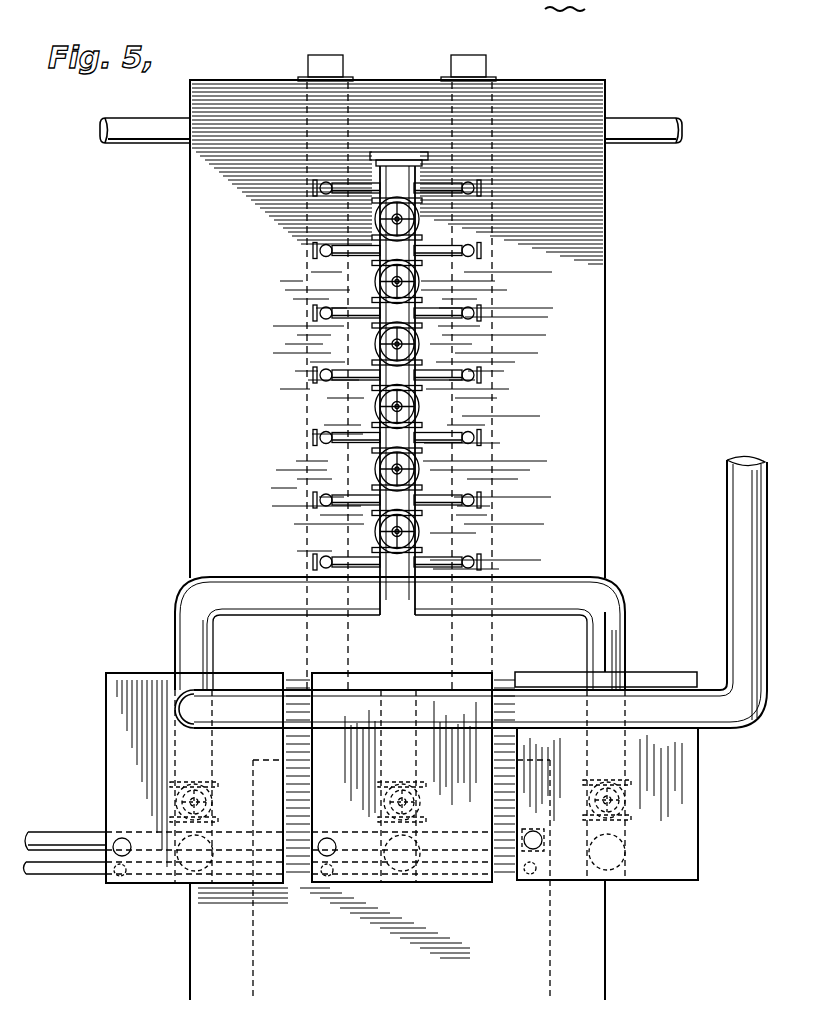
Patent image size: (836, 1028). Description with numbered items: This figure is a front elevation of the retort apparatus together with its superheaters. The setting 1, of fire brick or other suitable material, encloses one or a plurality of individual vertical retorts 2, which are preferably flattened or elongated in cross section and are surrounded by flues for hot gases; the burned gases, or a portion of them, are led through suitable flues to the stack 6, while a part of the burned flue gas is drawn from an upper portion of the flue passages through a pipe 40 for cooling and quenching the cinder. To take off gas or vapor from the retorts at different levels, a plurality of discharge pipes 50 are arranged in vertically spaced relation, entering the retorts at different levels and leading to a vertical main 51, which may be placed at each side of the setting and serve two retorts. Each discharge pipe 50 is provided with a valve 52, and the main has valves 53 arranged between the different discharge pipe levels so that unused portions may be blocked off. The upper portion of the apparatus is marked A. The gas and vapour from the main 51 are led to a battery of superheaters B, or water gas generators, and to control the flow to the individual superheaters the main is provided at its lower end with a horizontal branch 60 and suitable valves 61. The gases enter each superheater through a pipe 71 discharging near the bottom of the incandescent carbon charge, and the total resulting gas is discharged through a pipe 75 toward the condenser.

The setting 1 is at (606, 218).
The vertical retort 2 is at (305, 350).
The stack 6 is at (575, 30).
The pipe 40 is at (132, 148).
The discharge pipe 50 is at (345, 256).
The vertical main 51 is at (423, 432).
The valve 52 is at (312, 437).
The valve 53 is at (517, 392).
The horizontal branch 60 is at (543, 582).
The valve 61 is at (216, 797).
The pipe 71 is at (183, 872).
The pipe 75 is at (738, 577).
The upper section A is at (626, 278).
The superheater B is at (325, 878).